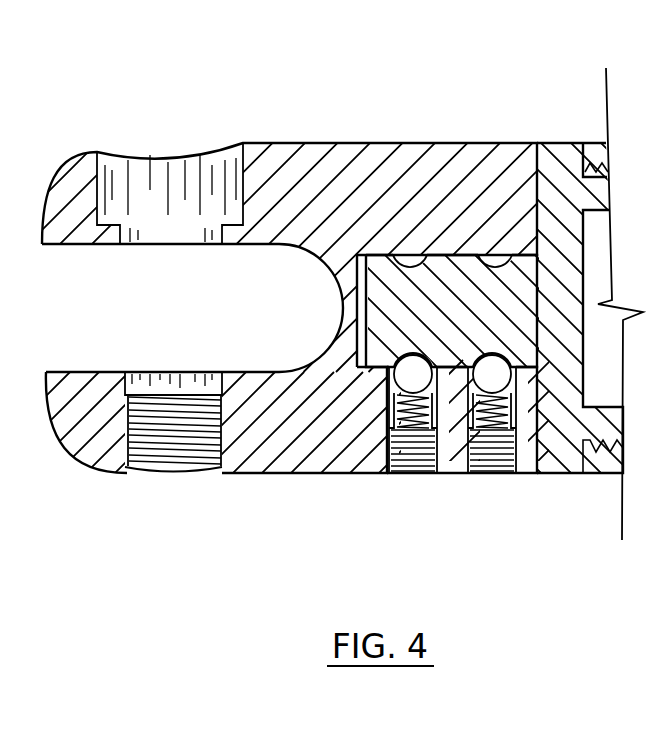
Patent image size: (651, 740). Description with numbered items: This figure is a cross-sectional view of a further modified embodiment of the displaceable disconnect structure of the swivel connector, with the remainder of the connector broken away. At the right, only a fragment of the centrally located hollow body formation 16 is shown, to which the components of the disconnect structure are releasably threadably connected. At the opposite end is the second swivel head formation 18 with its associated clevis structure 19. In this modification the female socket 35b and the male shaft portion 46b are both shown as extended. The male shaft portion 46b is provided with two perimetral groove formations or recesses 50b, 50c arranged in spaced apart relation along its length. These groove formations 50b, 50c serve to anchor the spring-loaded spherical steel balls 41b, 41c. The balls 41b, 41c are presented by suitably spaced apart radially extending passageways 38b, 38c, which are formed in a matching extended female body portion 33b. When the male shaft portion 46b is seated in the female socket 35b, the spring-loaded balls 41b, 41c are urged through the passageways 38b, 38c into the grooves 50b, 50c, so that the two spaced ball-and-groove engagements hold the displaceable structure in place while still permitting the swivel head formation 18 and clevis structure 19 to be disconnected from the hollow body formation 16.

The second swivel head formation 18 is at (260, 117).
The extended female body portion 33b is at (299, 167).
The female socket 35b is at (352, 338).
The clevis structure 19 is at (80, 440).
The male shaft portion 46b is at (378, 275).
The perimetral groove formation 50b is at (414, 262).
The perimetral groove formation 50c is at (488, 262).
The spring-loaded spherical steel ball 41b is at (388, 380).
The radially extending passageway 38b is at (418, 475).
The radially extending passageway 38c is at (490, 475).
The spring-loaded spherical steel ball 41c is at (490, 370).
The hollow body formation 16 is at (615, 470).